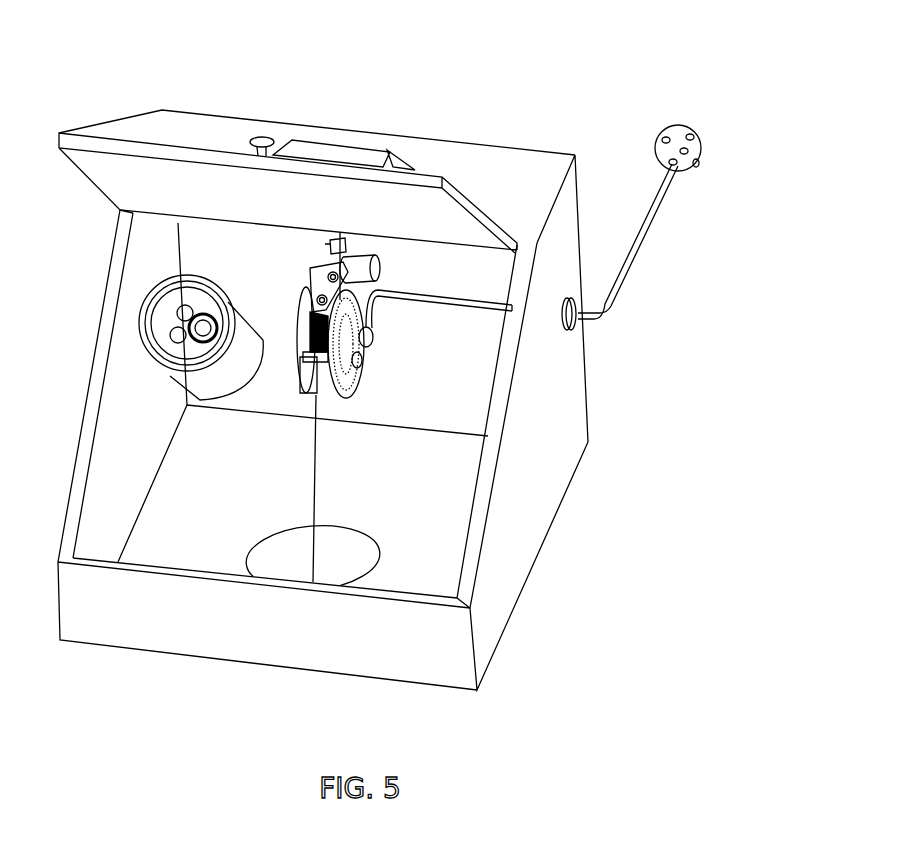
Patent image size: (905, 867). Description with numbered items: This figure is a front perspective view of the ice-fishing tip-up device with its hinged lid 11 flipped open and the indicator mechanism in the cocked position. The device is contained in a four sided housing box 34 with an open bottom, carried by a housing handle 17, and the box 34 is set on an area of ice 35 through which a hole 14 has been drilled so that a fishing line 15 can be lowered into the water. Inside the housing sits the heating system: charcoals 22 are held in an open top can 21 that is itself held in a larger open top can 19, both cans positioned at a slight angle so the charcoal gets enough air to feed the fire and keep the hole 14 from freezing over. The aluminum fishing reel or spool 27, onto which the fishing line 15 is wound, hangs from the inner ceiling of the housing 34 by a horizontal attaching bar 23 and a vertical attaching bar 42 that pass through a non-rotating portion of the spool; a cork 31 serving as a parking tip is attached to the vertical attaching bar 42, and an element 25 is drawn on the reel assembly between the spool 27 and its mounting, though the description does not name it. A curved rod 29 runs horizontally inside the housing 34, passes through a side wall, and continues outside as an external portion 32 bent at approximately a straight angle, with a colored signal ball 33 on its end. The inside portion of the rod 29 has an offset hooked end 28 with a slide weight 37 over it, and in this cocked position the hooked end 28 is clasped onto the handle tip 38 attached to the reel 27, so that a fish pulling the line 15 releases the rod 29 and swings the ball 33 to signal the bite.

The hinged lid 11 is at (173, 205).
The hole 14 is at (345, 575).
The fishing line 15 is at (310, 540).
The housing handle 17 is at (342, 153).
The larger open top can 19 is at (162, 362).
The open top can 21 is at (157, 333).
The charcoals 22 is at (182, 343).
The horizontal attaching bar 23 is at (323, 290).
The spring 25 is at (312, 365).
The fishing reel 27 is at (300, 360).
The hooked end 28 is at (352, 390).
The curved rod 29 is at (445, 311).
The cork 31 is at (363, 270).
The external portion of the curved rod 32 is at (648, 223).
The colored signal ball 33 is at (657, 142).
The housing box 34 is at (565, 435).
The ice 35 is at (420, 553).
The slide weight 37 is at (366, 330).
The handle tip 38 is at (363, 357).
The vertical attaching bar 42 is at (340, 266).